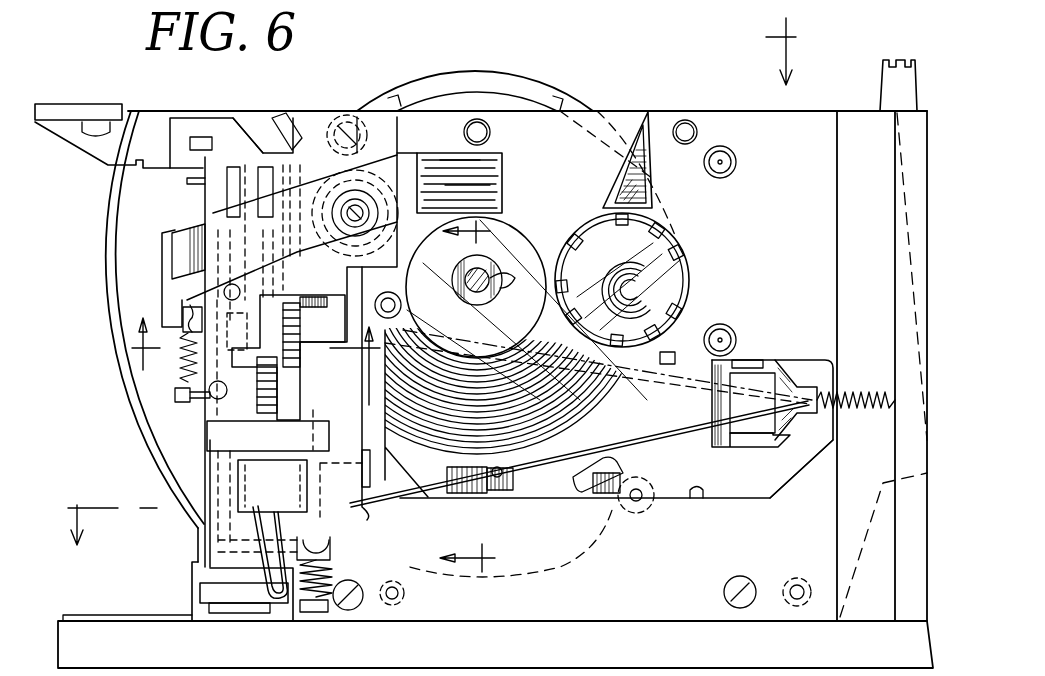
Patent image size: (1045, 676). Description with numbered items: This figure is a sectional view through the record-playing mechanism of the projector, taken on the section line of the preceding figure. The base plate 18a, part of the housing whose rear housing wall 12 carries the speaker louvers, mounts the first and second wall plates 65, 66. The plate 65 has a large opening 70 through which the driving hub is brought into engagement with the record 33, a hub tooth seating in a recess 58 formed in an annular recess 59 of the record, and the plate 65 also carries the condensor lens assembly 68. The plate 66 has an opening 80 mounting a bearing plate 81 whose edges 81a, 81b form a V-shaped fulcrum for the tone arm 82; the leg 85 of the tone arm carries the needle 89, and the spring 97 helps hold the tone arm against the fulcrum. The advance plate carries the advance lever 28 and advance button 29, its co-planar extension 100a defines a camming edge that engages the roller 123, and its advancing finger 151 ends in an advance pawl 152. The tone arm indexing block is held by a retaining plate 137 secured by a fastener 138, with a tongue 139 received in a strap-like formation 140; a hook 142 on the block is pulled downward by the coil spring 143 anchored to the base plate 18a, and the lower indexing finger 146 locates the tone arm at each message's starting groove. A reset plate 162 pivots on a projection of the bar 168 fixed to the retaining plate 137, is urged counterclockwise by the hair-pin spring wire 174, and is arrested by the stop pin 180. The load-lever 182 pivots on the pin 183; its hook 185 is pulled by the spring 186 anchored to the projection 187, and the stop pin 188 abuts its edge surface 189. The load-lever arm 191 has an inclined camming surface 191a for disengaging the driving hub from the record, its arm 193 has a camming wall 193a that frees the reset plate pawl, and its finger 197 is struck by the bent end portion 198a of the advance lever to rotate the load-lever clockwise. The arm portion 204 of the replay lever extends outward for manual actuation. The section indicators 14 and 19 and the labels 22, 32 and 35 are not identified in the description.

The rear housing wall 12 is at (442, 281).
The section line 14- 14 is at (483, 402).
The base plate 18a is at (553, 621).
The section line 19- 19 is at (256, 362).
The cover arc 22 is at (555, 74).
The advance lever 28 is at (134, 128).
The advance button 29 is at (75, 104).
The outer arcuate wall 32 is at (420, 81).
The record 33 is at (491, 92).
The dashed cover outline 35 is at (567, 111).
The recess 58 is at (476, 287).
The annular recess 59 is at (465, 290).
The first wall plate 65 is at (793, 221).
The second wall plate 66 is at (700, 478).
The condensor lens assembly 68 is at (690, 270).
The large opening 70 is at (505, 228).
The opening 80 is at (668, 364).
The bearing plate 81 is at (722, 447).
The edge 81a is at (778, 370).
The edge 81b is at (800, 445).
The tone arm 82 is at (692, 413).
The second leg 85 is at (656, 440).
The needle 89 is at (500, 480).
The spring 97 is at (863, 396).
The co-planar extension 100a is at (600, 460).
The roller 123 is at (645, 512).
The retaining plate 137 is at (203, 198).
The fastener 138 is at (347, 122).
The tongue 139 is at (192, 580).
The strap-like formation 140 is at (200, 595).
The hook 142 is at (332, 545).
The coil spring 143 is at (335, 580).
The lower indexing finger 146 is at (370, 512).
The advancing finger 151 is at (288, 113).
The advance pawl 152 is at (270, 125).
The reset plate 162 is at (230, 489).
The bar 168 is at (205, 452).
The spring wire 174 is at (263, 558).
The stop pin 180 is at (207, 432).
The load-lever 182 is at (150, 249).
The pin 183 is at (358, 205).
The hook 185 is at (183, 318).
The spring 186 is at (180, 358).
The projection 187 is at (175, 395).
The stop pin 188 is at (240, 290).
The edge surface 189 is at (225, 292).
The arm 191 is at (503, 165).
The inclined camming surface 191a is at (500, 184).
The arm 193 is at (355, 255).
The inclined camming wall 193a is at (300, 345).
The finger 197 is at (185, 245).
The bent end portion 198a is at (200, 137).
The arm portion 204 is at (897, 60).